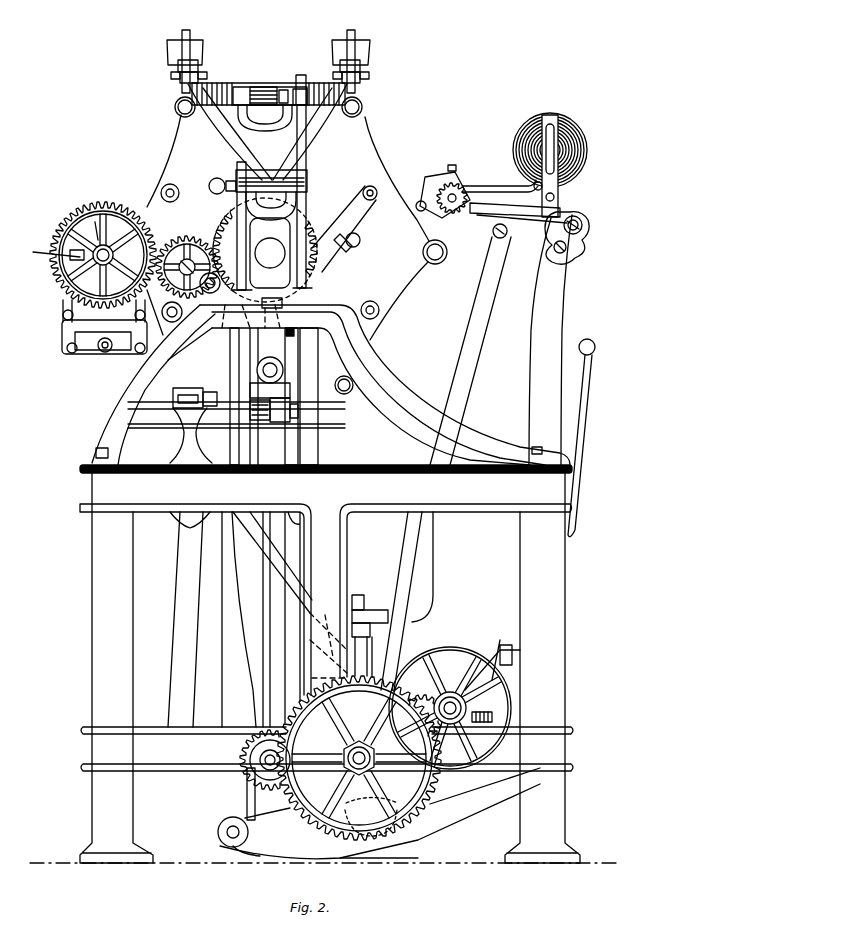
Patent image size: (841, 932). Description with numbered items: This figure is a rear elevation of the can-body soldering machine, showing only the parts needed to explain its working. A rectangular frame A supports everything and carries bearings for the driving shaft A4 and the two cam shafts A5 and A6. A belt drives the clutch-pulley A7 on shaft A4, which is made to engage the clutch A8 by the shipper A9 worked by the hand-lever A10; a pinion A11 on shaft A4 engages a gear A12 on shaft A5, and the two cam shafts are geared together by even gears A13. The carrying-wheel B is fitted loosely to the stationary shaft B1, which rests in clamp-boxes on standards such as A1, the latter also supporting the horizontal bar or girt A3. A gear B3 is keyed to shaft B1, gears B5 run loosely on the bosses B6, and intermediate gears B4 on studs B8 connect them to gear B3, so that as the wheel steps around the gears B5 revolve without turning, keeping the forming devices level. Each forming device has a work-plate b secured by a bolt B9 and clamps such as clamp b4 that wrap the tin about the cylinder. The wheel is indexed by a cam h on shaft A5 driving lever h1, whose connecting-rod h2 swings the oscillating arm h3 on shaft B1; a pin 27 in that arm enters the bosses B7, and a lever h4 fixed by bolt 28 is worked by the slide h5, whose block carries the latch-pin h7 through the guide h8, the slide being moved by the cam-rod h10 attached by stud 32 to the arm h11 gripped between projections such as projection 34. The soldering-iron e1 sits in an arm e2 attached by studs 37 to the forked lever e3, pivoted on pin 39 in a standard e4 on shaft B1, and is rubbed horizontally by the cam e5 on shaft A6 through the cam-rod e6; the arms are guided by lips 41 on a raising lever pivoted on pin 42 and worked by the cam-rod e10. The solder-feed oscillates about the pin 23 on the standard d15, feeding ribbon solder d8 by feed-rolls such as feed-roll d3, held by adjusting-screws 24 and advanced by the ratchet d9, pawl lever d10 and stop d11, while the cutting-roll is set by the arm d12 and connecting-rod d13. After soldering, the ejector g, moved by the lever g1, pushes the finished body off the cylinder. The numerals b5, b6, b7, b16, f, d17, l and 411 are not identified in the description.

The frame A is at (330, 668).
The standard A1 is at (153, 377).
The horizontal bar or girt A3 is at (369, 385).
The shaft A4 is at (462, 690).
The shaft A5 is at (338, 748).
The shaft A6 is at (262, 752).
The clutch-pulley A7 is at (448, 650).
The clutch A8 is at (262, 770).
The shipper A9 is at (495, 747).
The hand-lever A10 is at (580, 418).
The pinion A11 is at (450, 694).
The gear A12 is at (420, 842).
The even gears A13 is at (395, 786).
The wheel or flange B is at (288, 227).
The stationary shaft B1 is at (270, 253).
The gear B3 is at (232, 215).
The intermediate gear B4 is at (187, 240).
The gear B5 is at (103, 243).
The hub or boss B6 is at (175, 107).
The boss B7 is at (160, 190).
The stud B8 is at (190, 268).
The bolt B9 is at (113, 255).
The work-plate b is at (92, 231).
The clamp b4 is at (147, 335).
The plate b5 is at (98, 335).
The screw b6 is at (62, 336).
The pivot b7 is at (100, 354).
The shaft b16 is at (52, 250).
The soldering-iron e1 is at (167, 50).
The arm e2 is at (188, 32).
The forked lever e3 is at (240, 142).
The standard e4 is at (268, 193).
The cam e5 is at (272, 111).
The cam-rod e6 is at (261, 619).
The cam-rod e10 is at (310, 396).
The rod f is at (189, 619).
The ejector g is at (212, 406).
The lever g1 is at (193, 437).
The cam h is at (300, 812).
The lever h1 is at (286, 838).
The connecting-rod h2 is at (258, 340).
The oscillating arm h3 is at (344, 227).
The lever h4 is at (358, 226).
The slide h5 is at (282, 308).
The latch-pin h7 is at (270, 370).
The guide h8 is at (324, 645).
The cam-rod h10 is at (272, 619).
The arm h11 is at (306, 352).
The feed-roll d3 is at (495, 186).
The roll of sheet or ribbon solder d8 is at (588, 152).
The ratchet d9 is at (458, 190).
The pawl-carrying lever d10 is at (560, 213).
The adjustable stop d11 is at (584, 250).
The arm or crank d12 is at (416, 204).
The connecting-rod d13 is at (500, 272).
The standard d15 is at (550, 340).
The rod d17 is at (392, 601).
The block l is at (370, 616).
The pin 23 is at (582, 225).
The adjusting-screw 24 is at (448, 168).
The pin 27 is at (375, 188).
The bolt 28 is at (340, 244).
The stud 32 is at (268, 420).
The projection 34 is at (294, 334).
The stud 37 is at (171, 78).
The pin 39 is at (307, 181).
The lip 41 is at (178, 66).
The pin 411 is at (220, 178).
The pin 42 is at (230, 86).